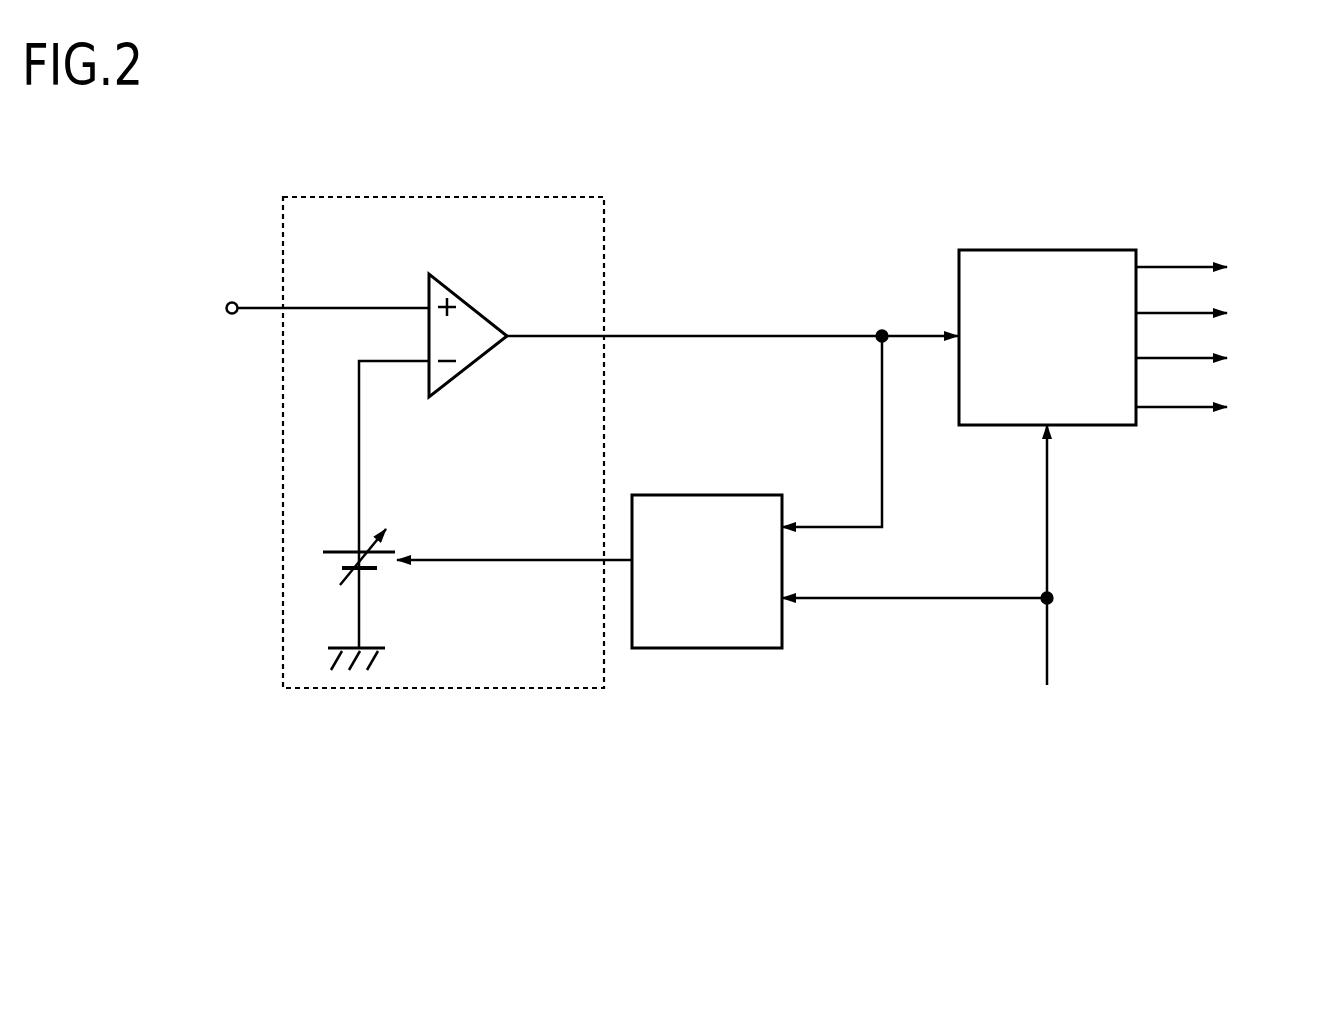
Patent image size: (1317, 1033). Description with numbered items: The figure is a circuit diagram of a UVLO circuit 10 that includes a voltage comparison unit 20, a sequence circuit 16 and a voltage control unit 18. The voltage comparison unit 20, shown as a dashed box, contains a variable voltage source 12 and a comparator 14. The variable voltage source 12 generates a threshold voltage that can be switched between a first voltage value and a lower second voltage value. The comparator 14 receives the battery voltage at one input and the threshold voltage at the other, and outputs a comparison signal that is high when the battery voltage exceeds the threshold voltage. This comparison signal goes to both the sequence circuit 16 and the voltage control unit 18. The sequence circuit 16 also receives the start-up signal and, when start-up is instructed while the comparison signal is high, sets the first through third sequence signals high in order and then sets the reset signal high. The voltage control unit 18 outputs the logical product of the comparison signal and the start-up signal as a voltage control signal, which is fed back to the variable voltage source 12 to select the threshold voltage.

The UVLO circuit 10 is at (775, 887).
The variable voltage source 12 is at (376, 570).
The comparator 14 is at (460, 296).
The sequence circuit 16 is at (1093, 250).
The voltage control unit 18 is at (736, 494).
The voltage comparison unit 20 is at (565, 197).